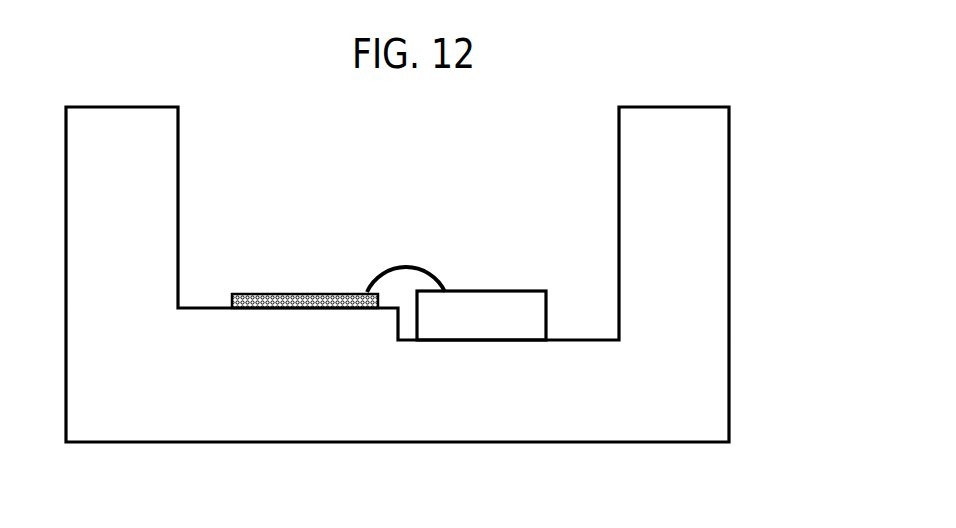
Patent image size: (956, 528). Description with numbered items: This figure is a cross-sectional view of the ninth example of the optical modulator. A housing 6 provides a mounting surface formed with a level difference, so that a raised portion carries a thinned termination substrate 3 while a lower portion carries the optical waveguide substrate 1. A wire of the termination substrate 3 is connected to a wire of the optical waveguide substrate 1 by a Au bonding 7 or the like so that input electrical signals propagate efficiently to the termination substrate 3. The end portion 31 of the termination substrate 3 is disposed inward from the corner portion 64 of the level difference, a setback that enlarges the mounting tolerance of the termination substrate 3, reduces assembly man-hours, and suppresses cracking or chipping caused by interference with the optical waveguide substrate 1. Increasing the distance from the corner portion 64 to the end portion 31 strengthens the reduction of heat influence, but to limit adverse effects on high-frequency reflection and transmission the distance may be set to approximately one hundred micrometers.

The optical waveguide substrate 1 is at (492, 300).
The termination substrate 3 is at (302, 293).
The housing 6 is at (672, 360).
The bonding 7 is at (405, 267).
The end portion 31 is at (382, 300).
The corner portion 64 is at (388, 326).